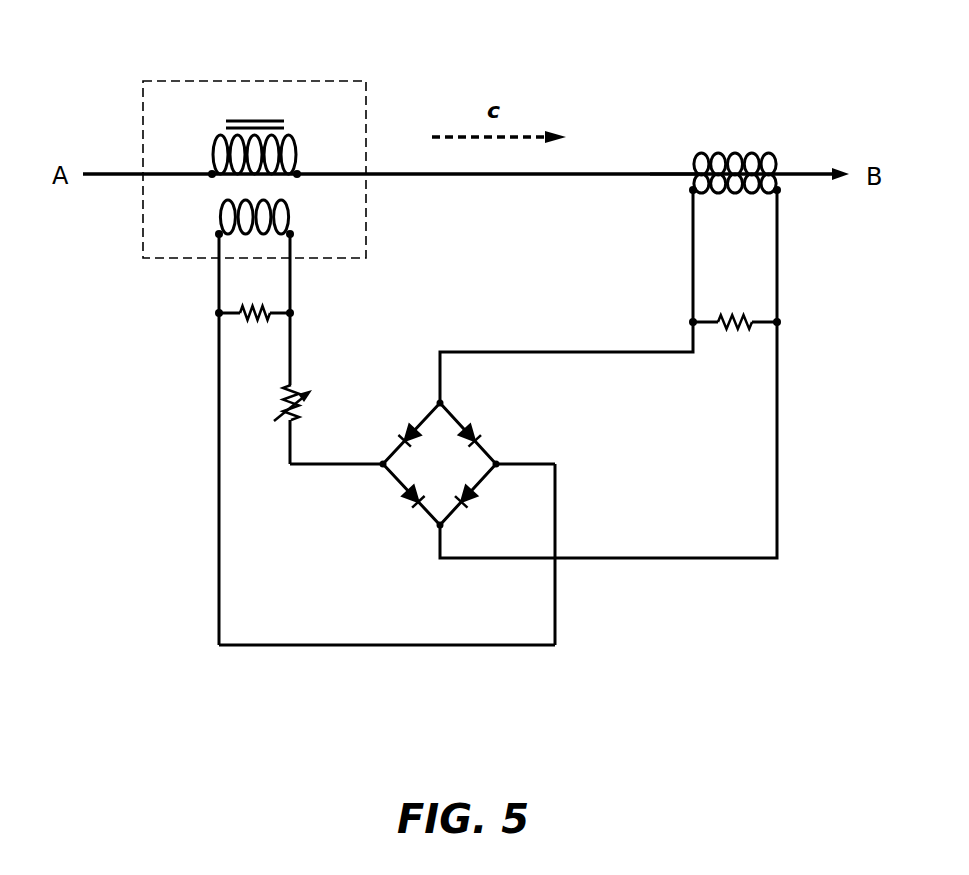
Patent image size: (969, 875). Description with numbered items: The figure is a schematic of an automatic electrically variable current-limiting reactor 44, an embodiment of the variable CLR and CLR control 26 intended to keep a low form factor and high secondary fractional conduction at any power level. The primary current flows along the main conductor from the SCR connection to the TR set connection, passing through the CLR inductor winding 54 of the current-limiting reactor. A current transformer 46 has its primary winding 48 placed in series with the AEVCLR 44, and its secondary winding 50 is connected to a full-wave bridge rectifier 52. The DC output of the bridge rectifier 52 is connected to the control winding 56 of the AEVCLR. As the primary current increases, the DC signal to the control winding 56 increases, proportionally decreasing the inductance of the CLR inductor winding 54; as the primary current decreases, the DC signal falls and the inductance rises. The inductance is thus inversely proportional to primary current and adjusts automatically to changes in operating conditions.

The variable CLR and CLR control 26 is at (338, 81).
The CLR inductor winding 54 is at (297, 153).
The control winding 56 is at (290, 216).
The automatic electrically variable current-limiting reactor 44 is at (219, 458).
The full-wave bridge rectifier 52 is at (452, 480).
The current transformer 46 is at (777, 162).
The primary winding 48 is at (747, 193).
The secondary winding 50 is at (690, 157).